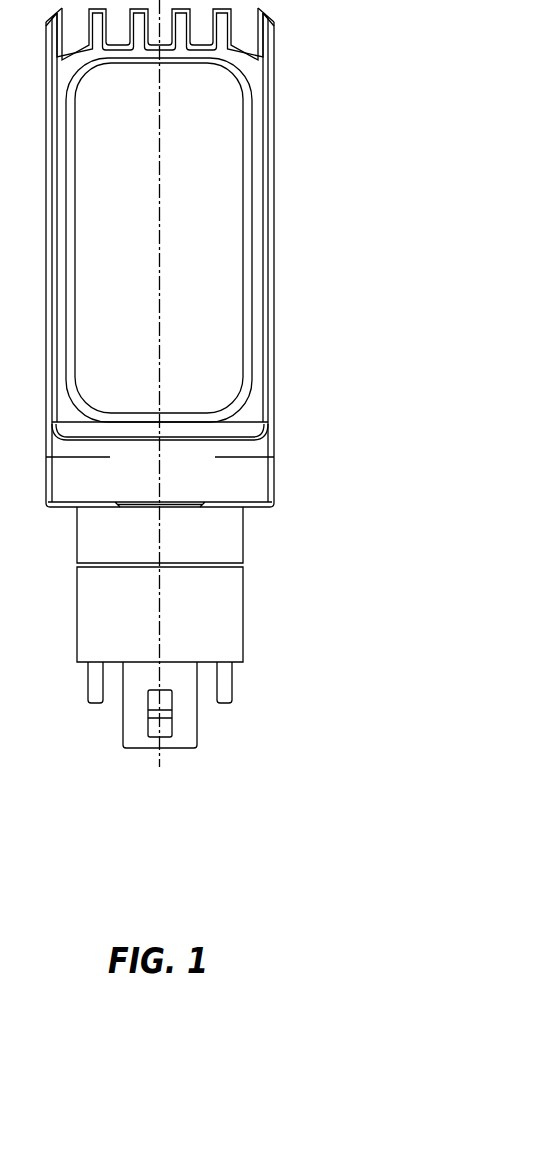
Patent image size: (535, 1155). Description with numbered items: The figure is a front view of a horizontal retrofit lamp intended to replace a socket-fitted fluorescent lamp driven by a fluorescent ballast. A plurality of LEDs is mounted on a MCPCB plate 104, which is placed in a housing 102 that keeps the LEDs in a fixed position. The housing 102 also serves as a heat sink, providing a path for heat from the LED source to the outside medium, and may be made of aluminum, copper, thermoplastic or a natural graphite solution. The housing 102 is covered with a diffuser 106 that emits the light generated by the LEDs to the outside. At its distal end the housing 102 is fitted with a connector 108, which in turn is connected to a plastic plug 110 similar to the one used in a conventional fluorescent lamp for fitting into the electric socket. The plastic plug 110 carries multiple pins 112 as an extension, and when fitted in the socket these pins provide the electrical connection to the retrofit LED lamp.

The housing 102 is at (277, 101).
The MCPCB plate 104 is at (253, 165).
The diffuser 106 is at (187, 322).
The connector 108 is at (247, 547).
The plastic plug 110 is at (247, 617).
The pins 112 is at (230, 688).